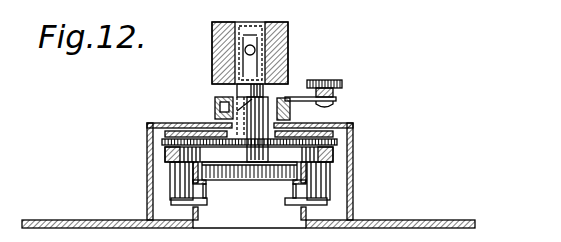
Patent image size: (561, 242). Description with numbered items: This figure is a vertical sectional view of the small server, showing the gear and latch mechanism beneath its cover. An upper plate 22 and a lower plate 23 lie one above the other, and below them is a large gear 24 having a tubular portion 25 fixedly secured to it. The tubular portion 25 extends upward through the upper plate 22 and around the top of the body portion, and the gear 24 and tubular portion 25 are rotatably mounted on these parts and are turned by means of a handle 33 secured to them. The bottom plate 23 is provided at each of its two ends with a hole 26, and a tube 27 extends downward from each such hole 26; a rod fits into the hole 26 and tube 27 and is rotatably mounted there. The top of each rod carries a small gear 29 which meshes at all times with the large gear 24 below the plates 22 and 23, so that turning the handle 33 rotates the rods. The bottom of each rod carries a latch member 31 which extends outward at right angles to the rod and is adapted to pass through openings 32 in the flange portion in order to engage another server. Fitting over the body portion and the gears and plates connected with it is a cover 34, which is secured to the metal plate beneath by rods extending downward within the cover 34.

The upper plate 22 is at (175, 124).
The lower plate 23 is at (335, 152).
The large gear 24 is at (283, 144).
The tubular portion 25 is at (235, 97).
The hole 26 is at (168, 149).
The tube 27 is at (329, 189).
The small gear 29 is at (335, 138).
The latch member 31 is at (207, 201).
The openings 32 is at (206, 190).
The handle 33 is at (338, 81).
The cover 34 is at (353, 190).